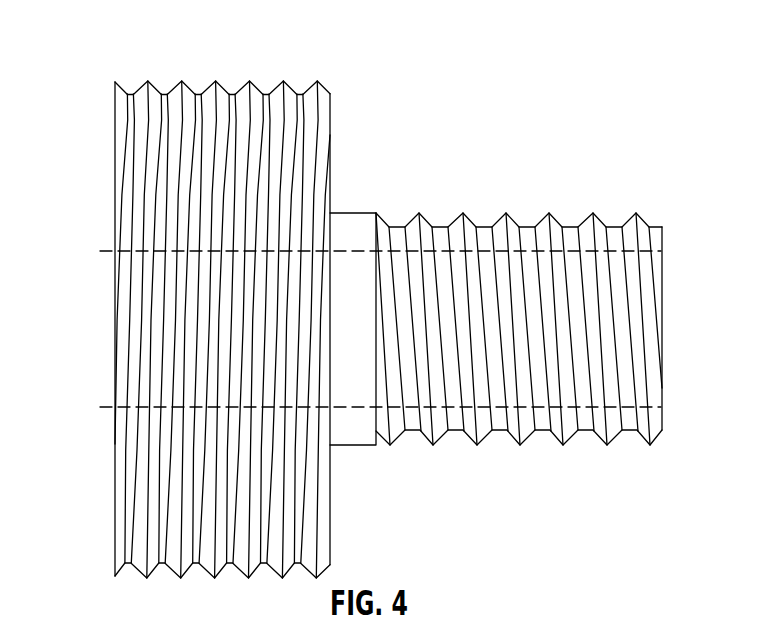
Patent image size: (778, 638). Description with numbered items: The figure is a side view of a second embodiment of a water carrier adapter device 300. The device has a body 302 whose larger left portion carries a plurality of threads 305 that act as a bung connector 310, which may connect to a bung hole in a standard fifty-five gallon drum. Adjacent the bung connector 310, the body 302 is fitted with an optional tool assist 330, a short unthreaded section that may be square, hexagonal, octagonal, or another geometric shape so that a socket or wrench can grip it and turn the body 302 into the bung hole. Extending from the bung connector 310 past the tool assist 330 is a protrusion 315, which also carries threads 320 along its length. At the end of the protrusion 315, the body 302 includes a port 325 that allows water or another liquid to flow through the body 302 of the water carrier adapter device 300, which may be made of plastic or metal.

The water carrier adapter device 300 is at (88, 34).
The body 302 is at (116, 158).
The threads 305 is at (175, 81).
The bung connector 310 is at (332, 115).
The tool assist 330 is at (353, 212).
The protrusion 315 is at (442, 223).
The threads 320 is at (555, 212).
The port 325 is at (662, 330).